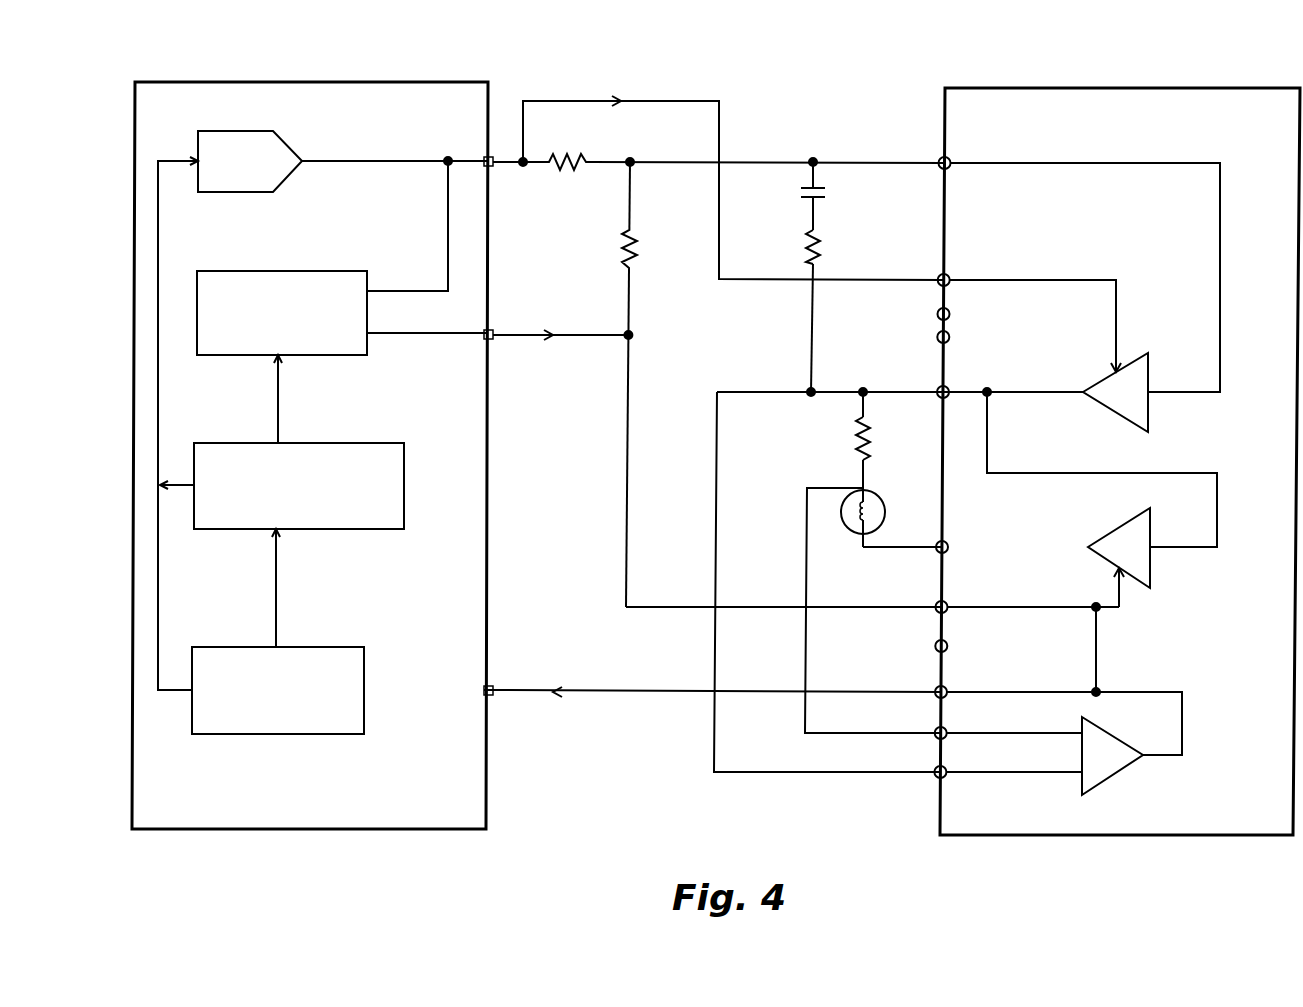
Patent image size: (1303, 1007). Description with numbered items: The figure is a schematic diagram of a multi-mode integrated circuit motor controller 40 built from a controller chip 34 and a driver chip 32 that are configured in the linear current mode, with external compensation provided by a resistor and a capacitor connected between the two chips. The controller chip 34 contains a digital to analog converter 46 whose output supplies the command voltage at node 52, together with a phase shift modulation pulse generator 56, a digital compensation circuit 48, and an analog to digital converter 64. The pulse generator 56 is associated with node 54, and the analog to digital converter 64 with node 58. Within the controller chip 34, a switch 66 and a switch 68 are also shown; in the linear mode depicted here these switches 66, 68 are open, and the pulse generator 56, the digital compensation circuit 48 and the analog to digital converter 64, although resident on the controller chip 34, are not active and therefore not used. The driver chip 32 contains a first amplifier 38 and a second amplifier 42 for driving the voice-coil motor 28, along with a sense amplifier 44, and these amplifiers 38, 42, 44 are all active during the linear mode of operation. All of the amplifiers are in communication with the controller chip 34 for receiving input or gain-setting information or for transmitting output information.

The multi-mode integrated circuit motor controller 40 is at (150, 60).
The controller chip 34 is at (437, 82).
The digital to analog converter (DAC) 46 is at (233, 131).
The phase shift modulation (PSM) pulse generator 56 is at (330, 271).
The switch 66 is at (395, 291).
The switch 68 is at (402, 333).
The node 52 is at (492, 167).
The node 54 is at (492, 339).
The node 58 is at (492, 696).
The digital compensation circuit 48 is at (350, 529).
The analog to digital converter (ADC) 64 is at (343, 647).
The driver chip 32 is at (1262, 72).
The first amplifier 38 is at (1148, 418).
The second amplifier 42 is at (1150, 572).
The sense amplifier 44 is at (1110, 780).
The voice-coil motor (VCM) 28 is at (882, 500).